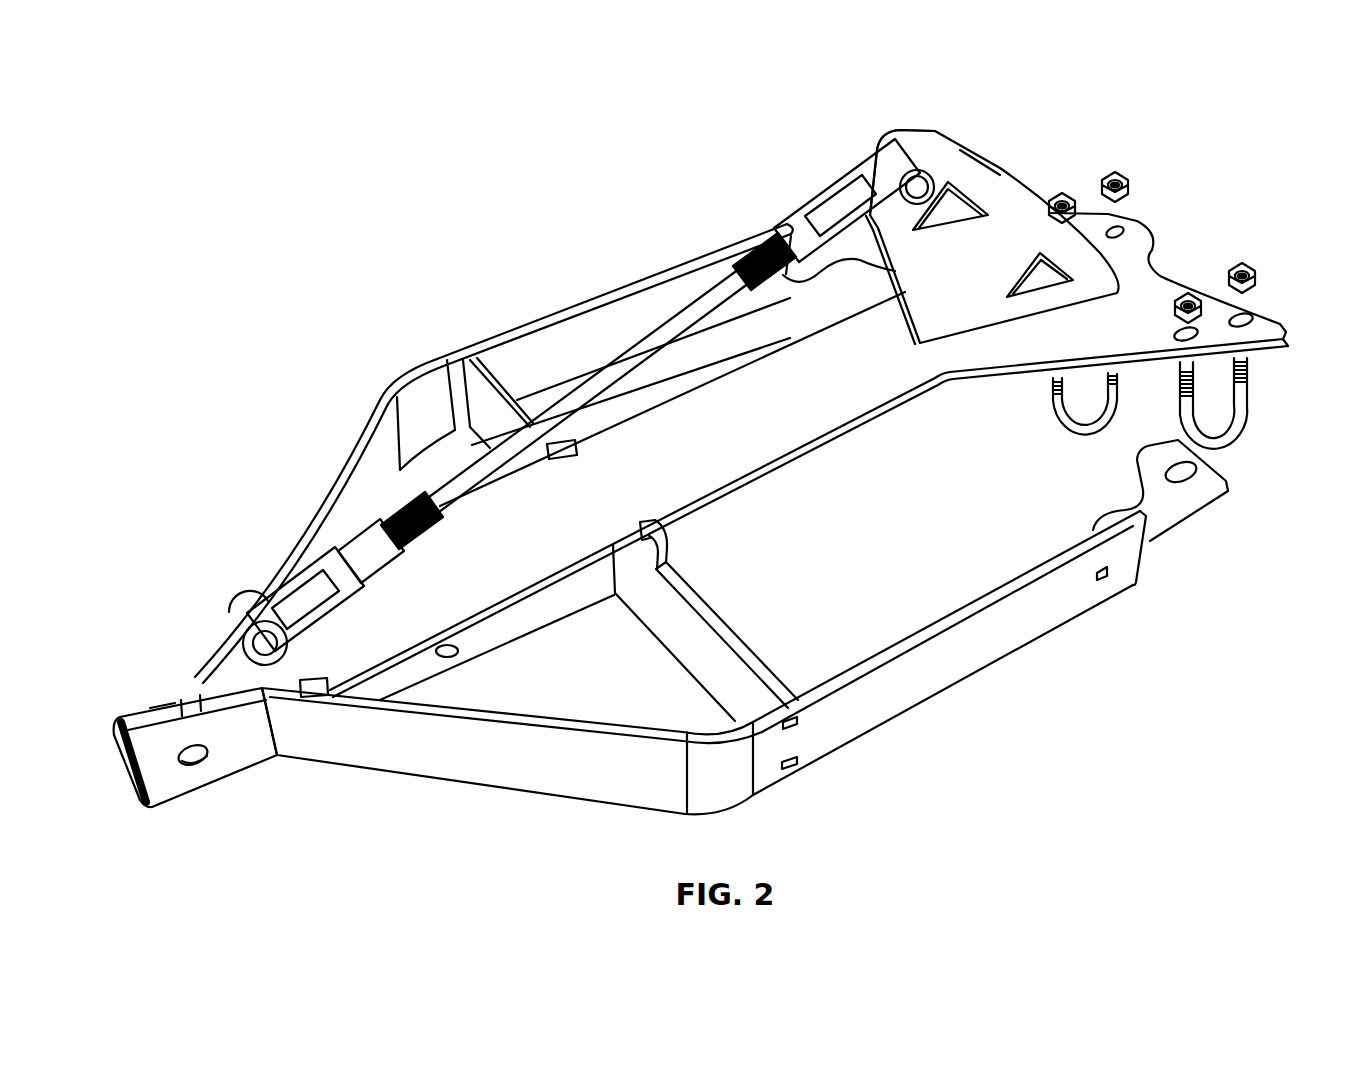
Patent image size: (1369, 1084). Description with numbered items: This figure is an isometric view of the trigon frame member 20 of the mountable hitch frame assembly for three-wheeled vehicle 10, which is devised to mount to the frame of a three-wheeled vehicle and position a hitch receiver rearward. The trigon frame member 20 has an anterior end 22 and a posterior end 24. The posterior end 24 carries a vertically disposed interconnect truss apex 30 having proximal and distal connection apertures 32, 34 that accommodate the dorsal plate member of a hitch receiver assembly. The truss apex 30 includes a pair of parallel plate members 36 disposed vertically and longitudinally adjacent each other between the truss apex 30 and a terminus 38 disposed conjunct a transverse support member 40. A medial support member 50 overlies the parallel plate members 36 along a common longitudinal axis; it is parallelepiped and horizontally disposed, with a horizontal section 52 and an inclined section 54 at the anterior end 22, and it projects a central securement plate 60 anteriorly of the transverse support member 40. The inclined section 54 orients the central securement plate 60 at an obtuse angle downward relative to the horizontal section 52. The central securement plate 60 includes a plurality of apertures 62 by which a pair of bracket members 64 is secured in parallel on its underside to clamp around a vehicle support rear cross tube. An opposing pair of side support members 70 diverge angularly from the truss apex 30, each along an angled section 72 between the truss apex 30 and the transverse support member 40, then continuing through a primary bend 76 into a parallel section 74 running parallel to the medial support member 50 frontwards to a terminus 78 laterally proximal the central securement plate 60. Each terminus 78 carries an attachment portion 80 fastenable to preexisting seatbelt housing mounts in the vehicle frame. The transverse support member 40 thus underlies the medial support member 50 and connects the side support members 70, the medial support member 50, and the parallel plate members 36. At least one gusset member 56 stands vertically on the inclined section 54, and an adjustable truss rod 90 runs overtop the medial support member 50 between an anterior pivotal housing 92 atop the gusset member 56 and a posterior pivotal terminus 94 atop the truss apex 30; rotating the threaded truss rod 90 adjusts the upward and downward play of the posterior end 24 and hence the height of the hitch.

The mountable hitch frame assembly for three-wheeled vehicle 10 is at (1162, 150).
The trigon frame member 20 is at (1136, 633).
The anterior end 22 is at (1270, 262).
The posterior end 24 is at (140, 796).
The interconnect truss apex 30 is at (180, 725).
The proximal connection aperture 32 is at (457, 654).
The distal connection aperture 34 is at (205, 763).
The parallel plate members 36 is at (180, 697).
The terminus 38 is at (615, 597).
The transverse support member 40 is at (723, 637).
The medial support member 50 is at (803, 425).
The horizontal section 52 is at (626, 506).
The inclined section 54 is at (992, 246).
The gusset member 56 is at (1003, 186).
The central securement plate 60 is at (1128, 288).
The apertures 62 is at (1118, 230).
The bracket members 64 is at (1060, 420).
The side support members 70 is at (726, 490).
The angled section 72 is at (347, 509).
The parallel section 74 is at (557, 359).
The primary bend 76 is at (413, 392).
The terminus 78 is at (790, 235).
The attachment portion 80 is at (868, 176).
The adjustable truss rod 90 is at (580, 402).
The anterior pivotal housing 92 is at (810, 235).
The posterior pivotal terminus 94 is at (300, 580).